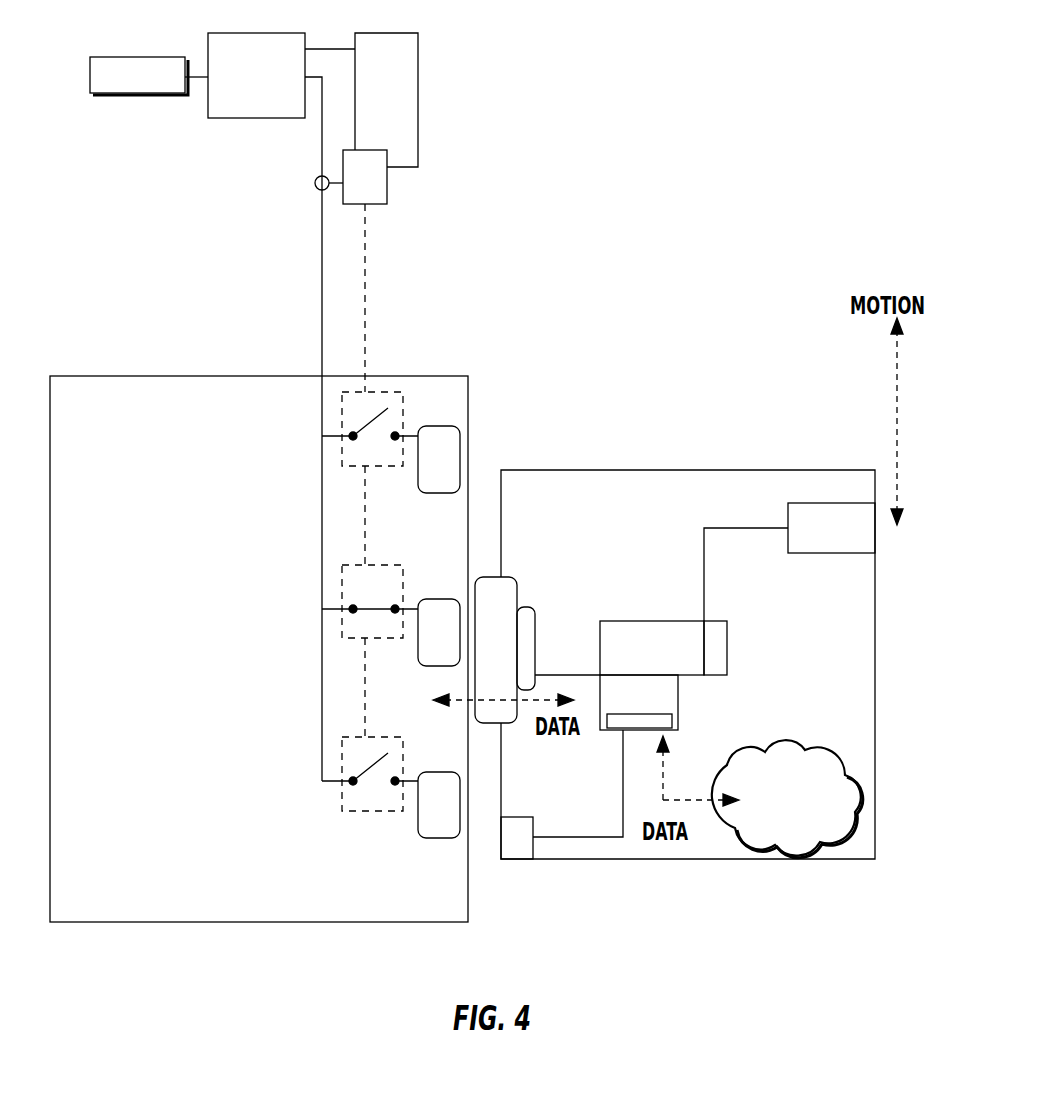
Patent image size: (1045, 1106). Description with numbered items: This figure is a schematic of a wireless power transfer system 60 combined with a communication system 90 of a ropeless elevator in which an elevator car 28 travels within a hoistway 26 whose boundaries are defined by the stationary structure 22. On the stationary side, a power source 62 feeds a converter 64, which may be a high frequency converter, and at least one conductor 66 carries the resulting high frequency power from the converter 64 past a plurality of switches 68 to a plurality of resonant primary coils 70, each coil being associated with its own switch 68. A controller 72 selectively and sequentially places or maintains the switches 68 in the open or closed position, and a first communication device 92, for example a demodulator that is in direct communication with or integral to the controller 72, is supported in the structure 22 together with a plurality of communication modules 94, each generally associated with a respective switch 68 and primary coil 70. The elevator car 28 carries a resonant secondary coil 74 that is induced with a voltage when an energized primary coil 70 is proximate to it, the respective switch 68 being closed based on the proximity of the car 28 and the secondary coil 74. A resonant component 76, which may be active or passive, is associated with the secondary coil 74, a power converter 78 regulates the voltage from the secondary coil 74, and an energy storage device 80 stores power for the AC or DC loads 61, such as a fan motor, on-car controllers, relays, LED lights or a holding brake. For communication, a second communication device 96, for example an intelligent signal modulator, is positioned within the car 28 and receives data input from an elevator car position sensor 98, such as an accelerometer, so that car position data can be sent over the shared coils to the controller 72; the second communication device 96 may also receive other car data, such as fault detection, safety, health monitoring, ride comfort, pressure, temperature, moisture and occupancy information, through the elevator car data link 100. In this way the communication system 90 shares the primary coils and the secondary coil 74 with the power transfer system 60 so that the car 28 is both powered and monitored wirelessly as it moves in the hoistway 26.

The structure 22 is at (203, 922).
The hoistway 26 is at (699, 226).
The elevator car 28 is at (670, 470).
The wireless power transfer system 60 is at (706, 100).
The power loads 61 is at (813, 503).
The power source 62 is at (135, 57).
The converter 64 is at (232, 100).
The conductor 66 is at (322, 366).
The switches 68 is at (368, 444).
The resonant primary coils 70 is at (430, 666).
The controller 72 is at (400, 80).
The resonant secondary coil 74 is at (485, 577).
The resonant component 76 is at (525, 607).
The power converter 78 is at (643, 628).
The energy storage device 80 is at (727, 648).
The communication system 90 is at (729, 972).
The first communication device 92 is at (387, 188).
The communication modules 94 is at (385, 392).
The second communication device 96 is at (678, 692).
The elevator car position sensor 98 is at (514, 846).
The elevator car data link 100 is at (782, 838).